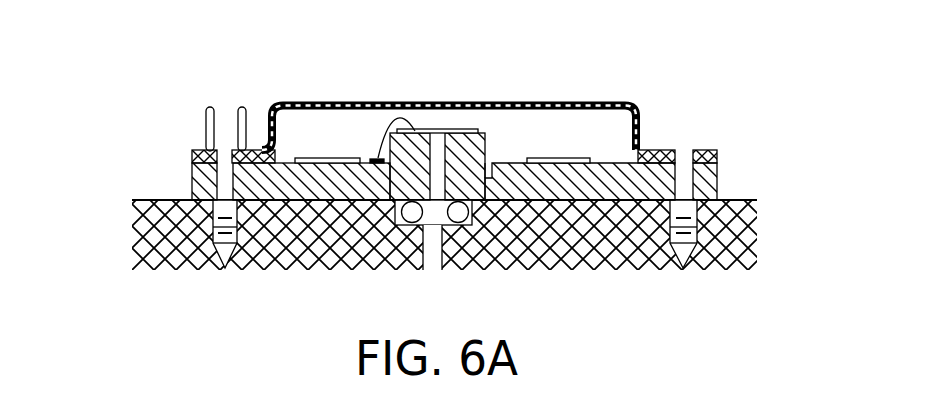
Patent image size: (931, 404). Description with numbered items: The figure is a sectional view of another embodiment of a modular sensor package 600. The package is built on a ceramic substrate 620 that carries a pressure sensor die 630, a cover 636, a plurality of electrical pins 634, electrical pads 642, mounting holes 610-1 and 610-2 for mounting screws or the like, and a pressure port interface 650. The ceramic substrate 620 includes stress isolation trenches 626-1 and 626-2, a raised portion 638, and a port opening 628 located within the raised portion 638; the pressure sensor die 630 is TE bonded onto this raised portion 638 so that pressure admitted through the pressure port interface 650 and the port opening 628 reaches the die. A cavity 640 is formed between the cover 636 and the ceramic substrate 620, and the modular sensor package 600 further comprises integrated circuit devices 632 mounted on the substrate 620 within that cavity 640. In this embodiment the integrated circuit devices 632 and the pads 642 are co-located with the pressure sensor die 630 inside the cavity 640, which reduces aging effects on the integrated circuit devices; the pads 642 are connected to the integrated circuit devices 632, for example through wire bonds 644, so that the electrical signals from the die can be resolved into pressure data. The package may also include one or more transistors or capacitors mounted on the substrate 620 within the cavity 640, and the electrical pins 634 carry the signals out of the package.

The modular sensor package 600 is at (419, 166).
The mounting hole 610-1 is at (222, 188).
The mounting hole 610-2 is at (687, 193).
The ceramic substrate 620 is at (717, 168).
The stress isolation trench 626-1 is at (392, 222).
The stress isolation trench 626-2 is at (493, 165).
The port opening 628 is at (448, 268).
The pressure sensor die 630 is at (466, 117).
The integrated circuit devices 632 is at (315, 157).
The electrical pins 634 is at (207, 92).
The cover 636 is at (640, 133).
The raised portion 638 is at (485, 145).
The cavity 640 is at (558, 110).
The electrical pads 642 is at (372, 165).
The bond wire 644 is at (377, 157).
The pressure port interface 650 is at (755, 232).